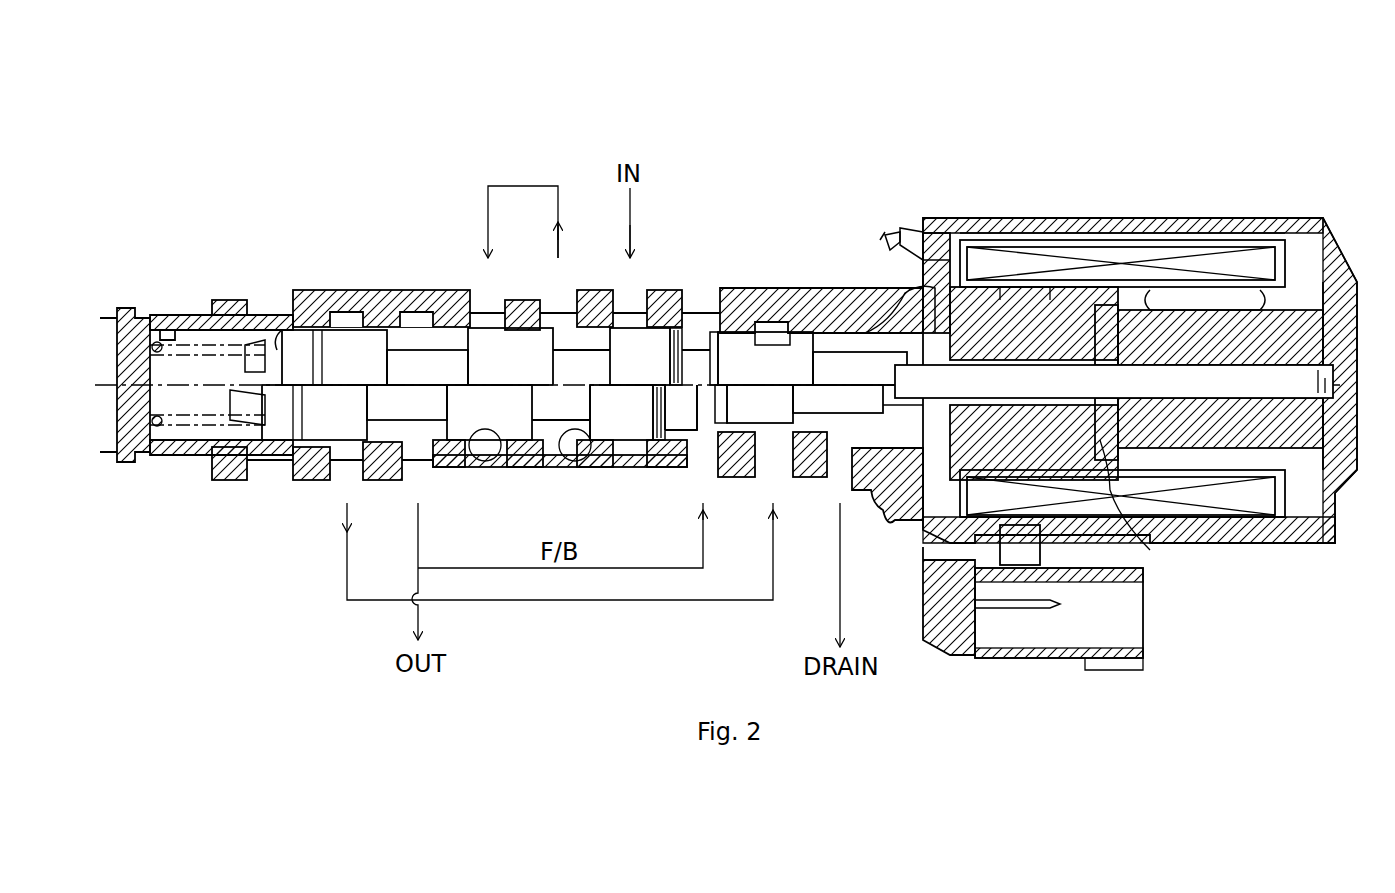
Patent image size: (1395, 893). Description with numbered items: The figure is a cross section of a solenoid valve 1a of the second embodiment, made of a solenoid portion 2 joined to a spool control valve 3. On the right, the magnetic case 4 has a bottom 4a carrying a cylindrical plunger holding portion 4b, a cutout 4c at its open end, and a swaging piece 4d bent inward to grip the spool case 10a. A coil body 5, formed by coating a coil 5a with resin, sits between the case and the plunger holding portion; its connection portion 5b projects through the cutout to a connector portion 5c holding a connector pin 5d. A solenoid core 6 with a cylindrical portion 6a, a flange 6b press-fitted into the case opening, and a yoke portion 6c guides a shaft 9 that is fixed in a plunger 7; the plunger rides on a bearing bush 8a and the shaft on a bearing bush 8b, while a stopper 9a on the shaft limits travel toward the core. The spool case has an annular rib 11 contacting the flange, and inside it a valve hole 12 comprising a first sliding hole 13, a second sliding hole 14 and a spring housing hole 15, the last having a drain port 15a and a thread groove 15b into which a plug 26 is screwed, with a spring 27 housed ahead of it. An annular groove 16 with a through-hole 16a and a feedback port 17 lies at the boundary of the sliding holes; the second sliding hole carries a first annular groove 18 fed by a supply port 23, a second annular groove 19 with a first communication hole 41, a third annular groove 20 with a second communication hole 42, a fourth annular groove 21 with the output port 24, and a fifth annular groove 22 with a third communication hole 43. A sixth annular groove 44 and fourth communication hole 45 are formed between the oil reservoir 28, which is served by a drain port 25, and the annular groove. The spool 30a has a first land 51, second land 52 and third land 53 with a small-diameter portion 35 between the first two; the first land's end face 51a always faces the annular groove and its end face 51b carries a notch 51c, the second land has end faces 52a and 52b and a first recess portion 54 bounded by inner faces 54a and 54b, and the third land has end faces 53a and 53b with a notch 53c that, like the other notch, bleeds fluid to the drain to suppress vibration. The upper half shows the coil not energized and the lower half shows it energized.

The solenoid valve 1a is at (1248, 52).
The solenoid portion 2 is at (1293, 160).
The spool control valve 3 is at (205, 165).
The case 4 is at (1303, 220).
The bottom 4a is at (1347, 347).
The plunger holding portion 4b is at (1215, 280).
The cutout 4c is at (1044, 528).
The swaging piece 4d is at (892, 235).
The coil body 5 is at (1189, 245).
The coil 5a is at (1152, 238).
The connection portion 5b is at (922, 553).
The connector portion 5c is at (1050, 658).
The connector pin 5d is at (1040, 604).
The solenoid core 6 is at (1018, 285).
The cylindrical portion 6a is at (1056, 290).
The flange 6b is at (938, 243).
The yoke portion 6c is at (1100, 305).
The plunger 7 is at (1330, 314).
The bearing bush 8a is at (1278, 300).
The bearing bush 8b is at (974, 310).
The shaft 9 is at (1328, 395).
The stopper 9a is at (1150, 530).
The spool case 10a is at (124, 308).
The rib 11 is at (888, 240).
The valve hole 12 is at (813, 475).
The first sliding hole 13 is at (740, 475).
The second sliding hole 14 is at (527, 467).
The spring housing hole 15 is at (230, 300).
The drain port 15a is at (245, 470).
The thread groove 15b is at (165, 326).
The annular groove 16 is at (678, 467).
The through-hole 16a is at (690, 330).
The feedback port 17 is at (722, 523).
The first annular groove 18 is at (623, 467).
The second annular groove 19 is at (568, 463).
The third annular groove 20 is at (485, 463).
The fourth annular groove 21 is at (418, 298).
The fifth annular groove 22 is at (342, 312).
The supply port 23 is at (650, 241).
The output port 24 is at (440, 471).
The drain port 25 is at (860, 476).
The plug 26 is at (122, 340).
The spring 27 is at (177, 440).
The oil reservoir 28 is at (920, 436).
The spool 30a is at (870, 313).
The small-diameter portion 35 is at (655, 408).
The first communication hole 41 is at (576, 241).
The second communication hole 42 is at (520, 300).
The third communication hole 43 is at (320, 480).
The sixth annular groove 44 is at (771, 320).
The fourth communication hole 45 is at (792, 527).
The first land 51 is at (793, 333).
The end face 51a is at (740, 368).
The end face 51b is at (782, 421).
The notch 51c is at (826, 370).
The second land 52 is at (662, 328).
The end face 52a is at (740, 333).
The end face 52b is at (481, 365).
The third land 53 is at (380, 332).
The end face 53a is at (400, 358).
The end face 53b is at (280, 330).
The notch 53c is at (380, 398).
The first recess portion 54 is at (590, 328).
The inner face 54a is at (606, 376).
The inner face 54b is at (527, 408).